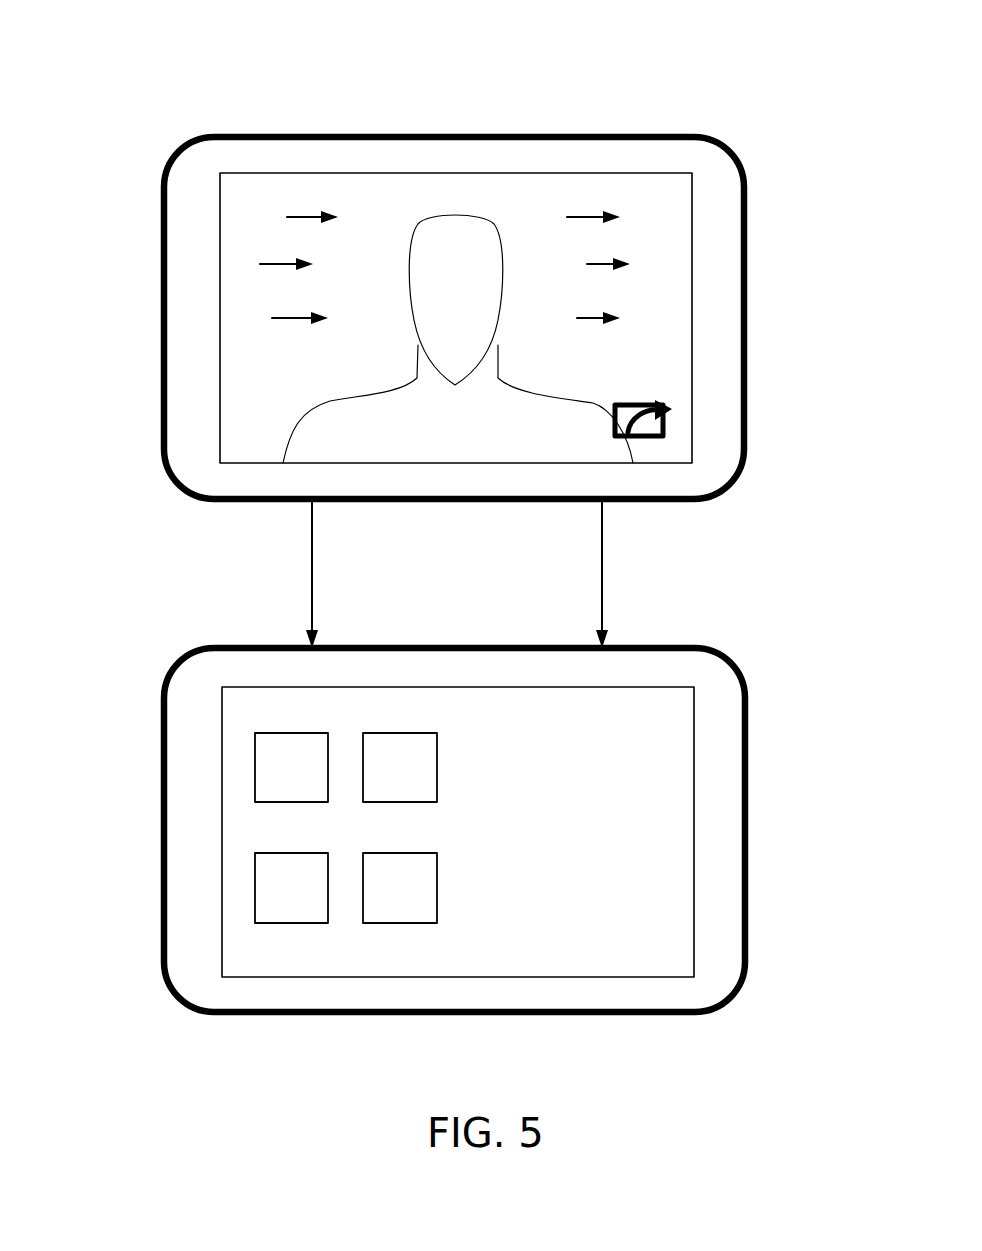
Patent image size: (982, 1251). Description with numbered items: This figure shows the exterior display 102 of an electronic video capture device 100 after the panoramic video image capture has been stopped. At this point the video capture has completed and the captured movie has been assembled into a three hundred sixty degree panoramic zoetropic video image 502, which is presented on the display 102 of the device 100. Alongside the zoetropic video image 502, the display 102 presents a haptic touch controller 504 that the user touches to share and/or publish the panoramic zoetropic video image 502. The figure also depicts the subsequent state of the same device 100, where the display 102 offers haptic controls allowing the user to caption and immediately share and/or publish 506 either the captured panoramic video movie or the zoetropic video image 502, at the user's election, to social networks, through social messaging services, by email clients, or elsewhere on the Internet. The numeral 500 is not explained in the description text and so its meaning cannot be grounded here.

The electronic video capture device 100 is at (163, 225).
The exterior display 102 is at (350, 173).
The captured image of user 500 is at (455, 405).
The 360° panoramic zoetropic video image 502 is at (642, 287).
The haptic touch controller 504 is at (672, 417).
The share and/or publish controls 506 is at (437, 873).